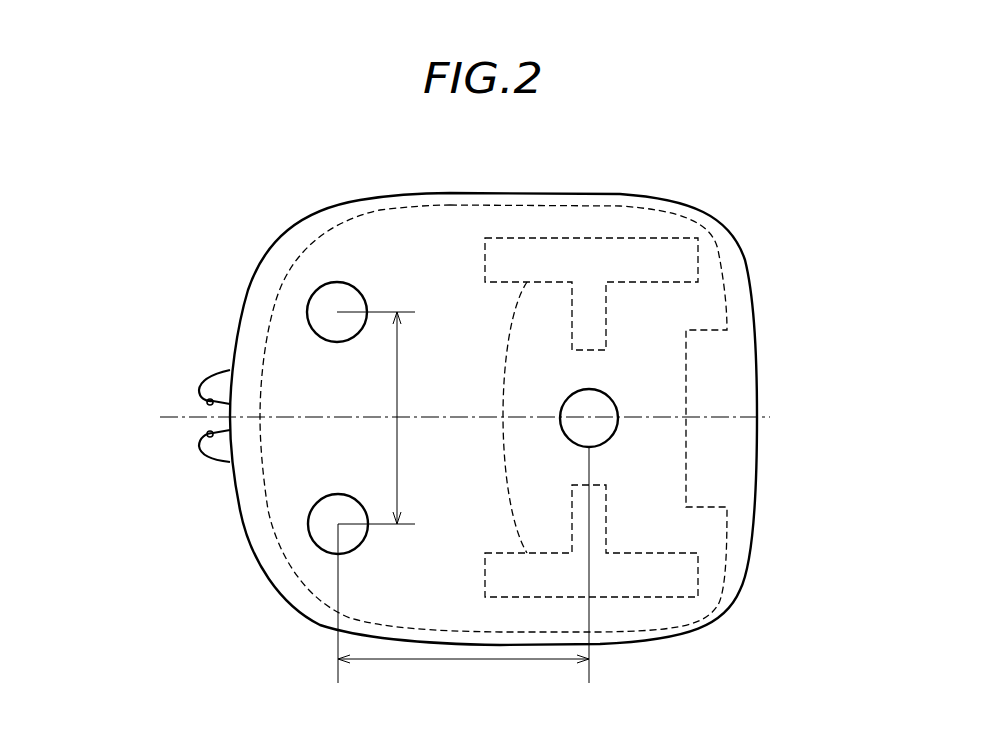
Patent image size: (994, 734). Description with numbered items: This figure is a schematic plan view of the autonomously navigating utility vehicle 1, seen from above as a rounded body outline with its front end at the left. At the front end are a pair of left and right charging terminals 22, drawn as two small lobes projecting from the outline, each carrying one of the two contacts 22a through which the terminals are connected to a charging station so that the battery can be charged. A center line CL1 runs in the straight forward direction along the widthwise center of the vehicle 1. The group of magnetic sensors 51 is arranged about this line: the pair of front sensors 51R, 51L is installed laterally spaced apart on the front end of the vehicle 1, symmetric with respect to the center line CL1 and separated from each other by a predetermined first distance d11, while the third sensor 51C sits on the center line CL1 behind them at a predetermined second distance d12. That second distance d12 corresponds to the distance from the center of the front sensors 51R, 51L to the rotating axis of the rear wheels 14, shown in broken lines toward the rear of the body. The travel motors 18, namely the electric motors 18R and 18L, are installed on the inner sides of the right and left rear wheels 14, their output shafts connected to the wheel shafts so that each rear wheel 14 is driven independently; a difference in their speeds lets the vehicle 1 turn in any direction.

The autonomously navigating utility vehicle 1 is at (699, 191).
The rear wheels 14 is at (507, 417).
The travel motors 18 is at (671, 417).
The right travel motor 18R is at (606, 304).
The left travel motor 18L is at (607, 507).
The charging terminals 22 is at (206, 395).
The contacts 22a is at (208, 432).
The group of magnetic sensors 51 is at (326, 418).
The right magnetic sensor 51R is at (337, 343).
The left magnetic sensor 51L is at (338, 494).
The third magnetic sensor 51C is at (613, 406).
The center line CL1 is at (485, 419).
The first distance d11 is at (390, 418).
The second distance d12 is at (463, 574).